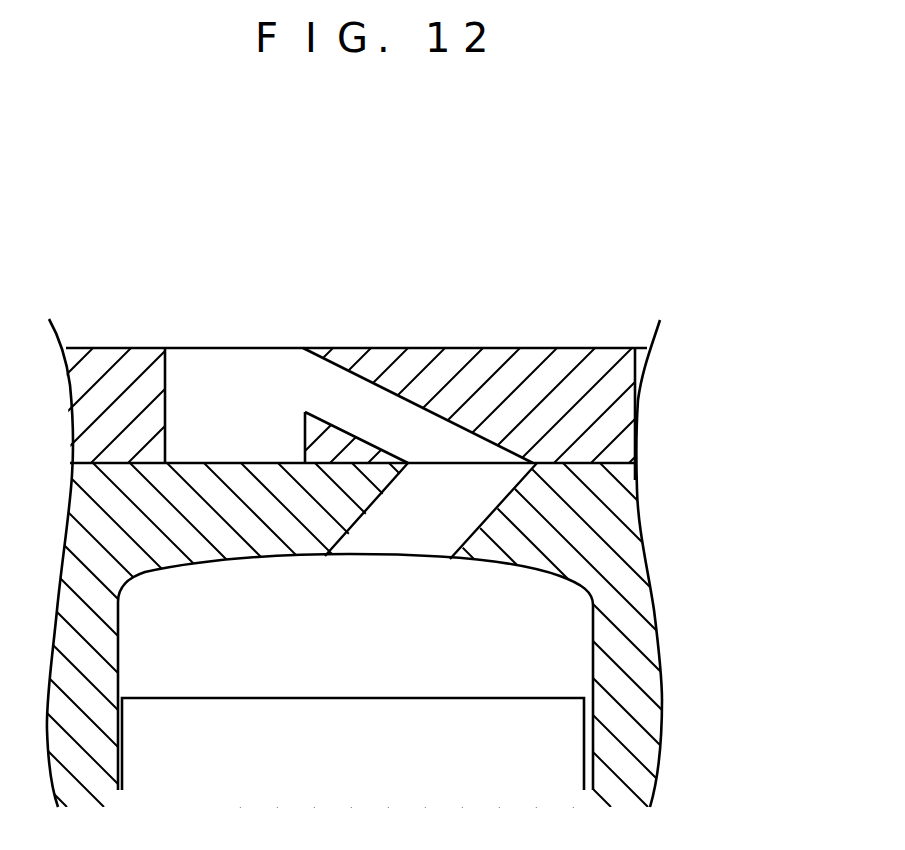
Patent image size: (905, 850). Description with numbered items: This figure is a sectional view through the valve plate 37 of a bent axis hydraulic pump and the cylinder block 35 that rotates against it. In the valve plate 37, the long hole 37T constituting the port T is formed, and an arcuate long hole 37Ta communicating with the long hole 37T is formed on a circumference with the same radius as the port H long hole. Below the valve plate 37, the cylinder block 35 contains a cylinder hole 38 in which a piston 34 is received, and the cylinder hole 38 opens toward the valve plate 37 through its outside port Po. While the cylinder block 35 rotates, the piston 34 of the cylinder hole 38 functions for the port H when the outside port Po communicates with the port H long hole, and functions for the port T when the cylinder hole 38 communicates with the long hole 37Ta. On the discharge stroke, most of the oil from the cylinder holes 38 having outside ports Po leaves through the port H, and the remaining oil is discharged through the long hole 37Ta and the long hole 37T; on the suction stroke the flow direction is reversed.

The valve plate 37 is at (458, 352).
The long hole 37T is at (165, 377).
The arcuate long hole 37Ta is at (450, 416).
The outside port Po is at (490, 516).
The cylinder block 35 is at (635, 556).
The cylinder hole 38 is at (594, 640).
The piston 34 is at (567, 751).